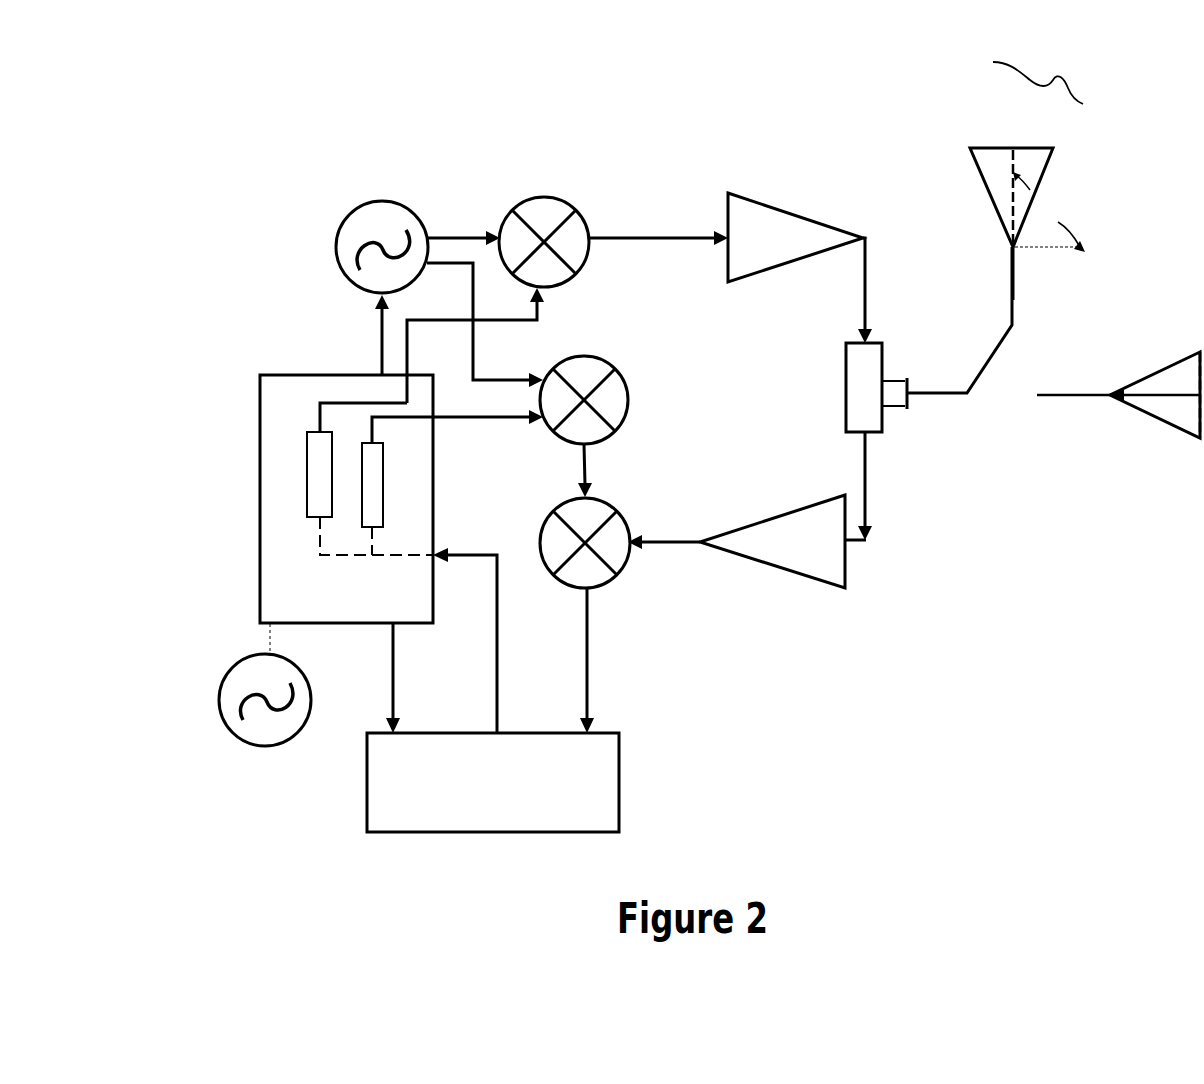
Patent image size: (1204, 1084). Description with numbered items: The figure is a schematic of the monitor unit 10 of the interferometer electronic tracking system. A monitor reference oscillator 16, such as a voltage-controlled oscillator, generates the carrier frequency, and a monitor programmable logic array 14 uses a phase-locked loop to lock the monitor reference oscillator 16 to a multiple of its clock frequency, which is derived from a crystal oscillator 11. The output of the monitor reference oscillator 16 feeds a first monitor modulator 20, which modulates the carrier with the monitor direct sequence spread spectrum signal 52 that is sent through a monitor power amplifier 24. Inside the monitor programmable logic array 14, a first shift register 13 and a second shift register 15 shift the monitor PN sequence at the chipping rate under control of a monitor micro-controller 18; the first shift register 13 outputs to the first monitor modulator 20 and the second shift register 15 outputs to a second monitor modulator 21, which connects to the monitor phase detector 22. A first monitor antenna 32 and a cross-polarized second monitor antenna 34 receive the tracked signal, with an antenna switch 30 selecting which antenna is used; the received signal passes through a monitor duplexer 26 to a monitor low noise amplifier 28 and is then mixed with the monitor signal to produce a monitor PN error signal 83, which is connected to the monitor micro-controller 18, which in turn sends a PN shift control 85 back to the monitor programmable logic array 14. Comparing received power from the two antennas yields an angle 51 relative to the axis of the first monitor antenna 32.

The monitor unit 10 is at (292, 180).
The crystal oscillator 11 is at (235, 700).
The first shift register 13 is at (305, 445).
The monitor programmable logic array 14 is at (285, 503).
The second shift register 15 is at (385, 491).
The monitor reference oscillator 16 is at (399, 212).
The monitor micro-controller 18 is at (380, 773).
The first monitor modulator 20 is at (541, 218).
The second monitor modulator 21 is at (592, 375).
The monitor phase detector 22 is at (576, 583).
The monitor power amplifier 24 is at (781, 226).
The monitor duplexer 26 is at (880, 418).
The monitor low noise amplifier 28 is at (793, 560).
The antenna switch 30 is at (986, 375).
The first monitor antenna 32 is at (985, 195).
The second monitor antenna 34 is at (1162, 420).
The angle 51 is at (1049, 212).
The monitor direct sequence spread spectrum signal 52 is at (1018, 75).
The monitor PN error signal 83 is at (590, 690).
The micro-controller to logic array connection 85 is at (495, 643).